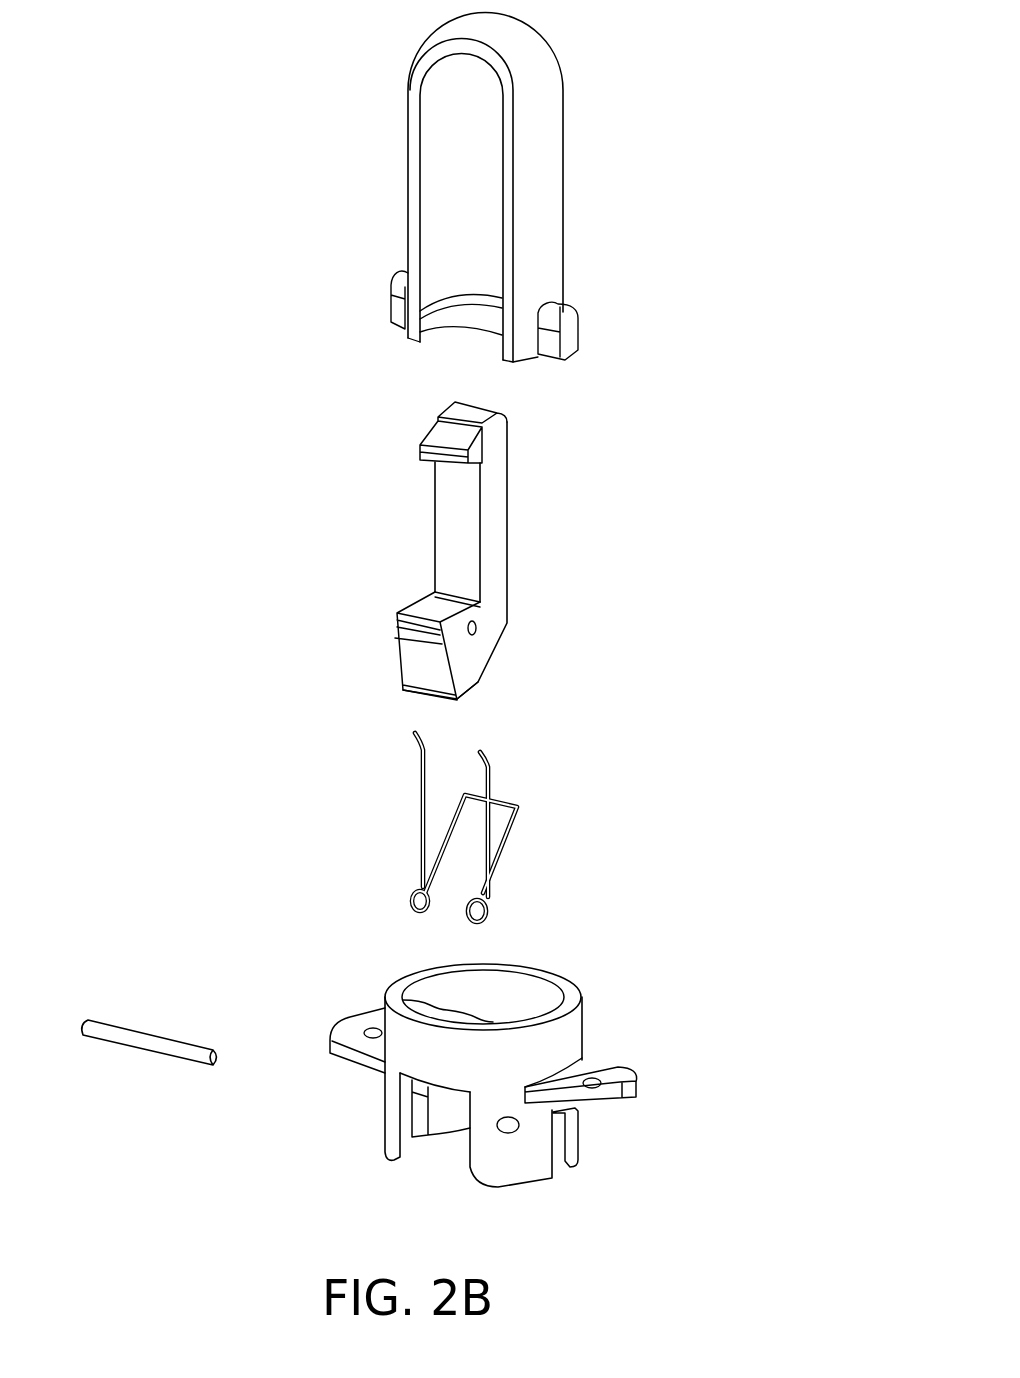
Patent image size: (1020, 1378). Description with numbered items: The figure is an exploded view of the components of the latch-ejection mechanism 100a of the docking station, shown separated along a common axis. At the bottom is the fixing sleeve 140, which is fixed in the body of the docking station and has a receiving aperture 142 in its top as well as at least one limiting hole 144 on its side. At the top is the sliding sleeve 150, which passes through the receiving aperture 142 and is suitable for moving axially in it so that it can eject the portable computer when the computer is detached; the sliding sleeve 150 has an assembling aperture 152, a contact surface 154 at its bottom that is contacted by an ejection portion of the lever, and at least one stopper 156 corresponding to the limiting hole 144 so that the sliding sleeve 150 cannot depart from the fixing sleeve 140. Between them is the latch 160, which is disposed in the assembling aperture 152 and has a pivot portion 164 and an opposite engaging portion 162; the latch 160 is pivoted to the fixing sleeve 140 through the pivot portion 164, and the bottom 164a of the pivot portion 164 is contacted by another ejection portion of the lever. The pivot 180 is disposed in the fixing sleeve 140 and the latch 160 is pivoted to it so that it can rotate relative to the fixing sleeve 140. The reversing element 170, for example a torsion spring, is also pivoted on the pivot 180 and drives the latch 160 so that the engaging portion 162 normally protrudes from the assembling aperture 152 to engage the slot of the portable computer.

The latch-ejection mechanism 100a is at (748, 1225).
The fixing sleeve 140 is at (598, 1045).
The receiving aperture 142 is at (535, 986).
The limiting hole 144 is at (568, 1155).
The sliding sleeve 150 is at (572, 125).
The assembling aperture 152 is at (490, 199).
The contact surface 154 is at (475, 325).
The stopper 156 is at (572, 340).
The latch 160 is at (628, 490).
The engaging portion 162 is at (472, 453).
The pivot portion 164 is at (467, 672).
The bottom of the pivot portion 164a is at (461, 695).
The reversing element 170 is at (495, 855).
The pivot 180 is at (113, 1030).